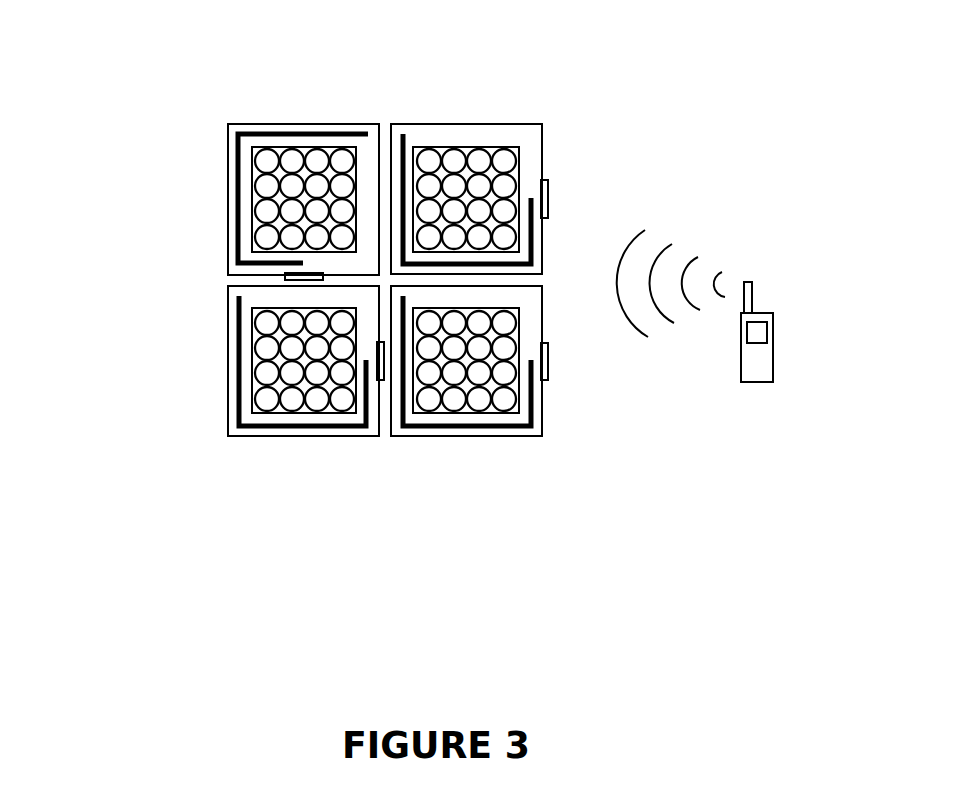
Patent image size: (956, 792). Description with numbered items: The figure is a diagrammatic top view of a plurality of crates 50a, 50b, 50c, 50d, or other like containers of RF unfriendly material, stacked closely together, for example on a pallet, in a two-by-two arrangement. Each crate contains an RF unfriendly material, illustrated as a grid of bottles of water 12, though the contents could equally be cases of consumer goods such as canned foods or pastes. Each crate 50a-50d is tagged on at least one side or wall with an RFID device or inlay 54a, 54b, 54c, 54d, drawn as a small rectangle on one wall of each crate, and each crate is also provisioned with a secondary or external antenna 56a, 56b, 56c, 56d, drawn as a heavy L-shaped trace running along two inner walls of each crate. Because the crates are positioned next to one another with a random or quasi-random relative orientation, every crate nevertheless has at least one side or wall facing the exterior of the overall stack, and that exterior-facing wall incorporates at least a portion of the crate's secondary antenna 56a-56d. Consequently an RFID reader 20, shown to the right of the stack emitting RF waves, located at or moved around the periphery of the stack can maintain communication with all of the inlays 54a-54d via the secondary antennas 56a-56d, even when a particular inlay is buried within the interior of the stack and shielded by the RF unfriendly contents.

The bottles of water 12 is at (295, 188).
The RFID reader 20 is at (757, 370).
The crate 50a is at (498, 433).
The crate 50b is at (460, 130).
The crate 50c is at (285, 128).
The crate 50d is at (252, 432).
The RFID device or inlay 54a is at (545, 363).
The RFID device or inlay 54b is at (545, 200).
The RFID device or inlay 54c is at (298, 277).
The RFID device or inlay 54d is at (382, 364).
The secondary or external antenna 56a is at (482, 427).
The secondary or external antenna 56b is at (531, 250).
The secondary or external antenna 56c is at (238, 198).
The secondary or external antenna 56d is at (237, 390).